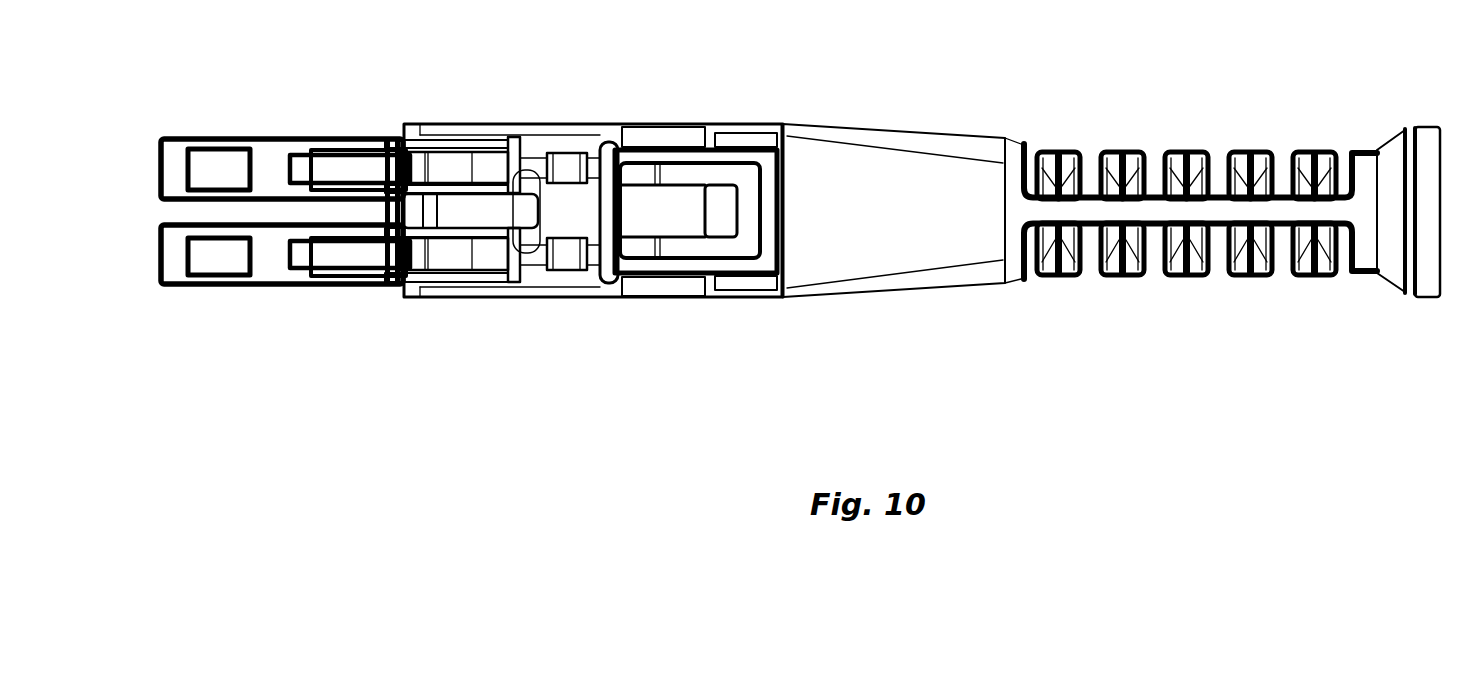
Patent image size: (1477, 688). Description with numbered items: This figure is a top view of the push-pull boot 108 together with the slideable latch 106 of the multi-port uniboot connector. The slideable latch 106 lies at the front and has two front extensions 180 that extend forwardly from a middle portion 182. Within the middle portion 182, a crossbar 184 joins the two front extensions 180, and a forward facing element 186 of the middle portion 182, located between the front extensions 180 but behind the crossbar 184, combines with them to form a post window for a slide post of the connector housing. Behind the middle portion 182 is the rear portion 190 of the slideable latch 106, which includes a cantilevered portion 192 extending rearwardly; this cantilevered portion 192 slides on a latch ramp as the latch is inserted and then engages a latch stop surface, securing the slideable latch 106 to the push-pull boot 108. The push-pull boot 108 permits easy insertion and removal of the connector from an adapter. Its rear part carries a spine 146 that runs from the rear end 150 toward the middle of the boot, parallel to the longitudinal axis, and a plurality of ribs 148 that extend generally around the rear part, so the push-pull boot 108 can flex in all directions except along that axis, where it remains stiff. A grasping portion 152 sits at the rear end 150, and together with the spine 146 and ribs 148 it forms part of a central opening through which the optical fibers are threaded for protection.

The slideable latch 106 is at (318, 312).
The push-pull boot 108 is at (922, 125).
The spine 146 is at (1278, 222).
The ribs 148 is at (1190, 278).
The rear end 150 is at (1448, 243).
The grasping portion 152 is at (1423, 126).
The front extensions 180 is at (152, 250).
The middle portion 182 is at (615, 317).
The crossbar 184 is at (392, 212).
The forward facing element 186 is at (522, 157).
The rear portion 190 is at (615, 317).
The cantilevered portion 192 is at (660, 212).